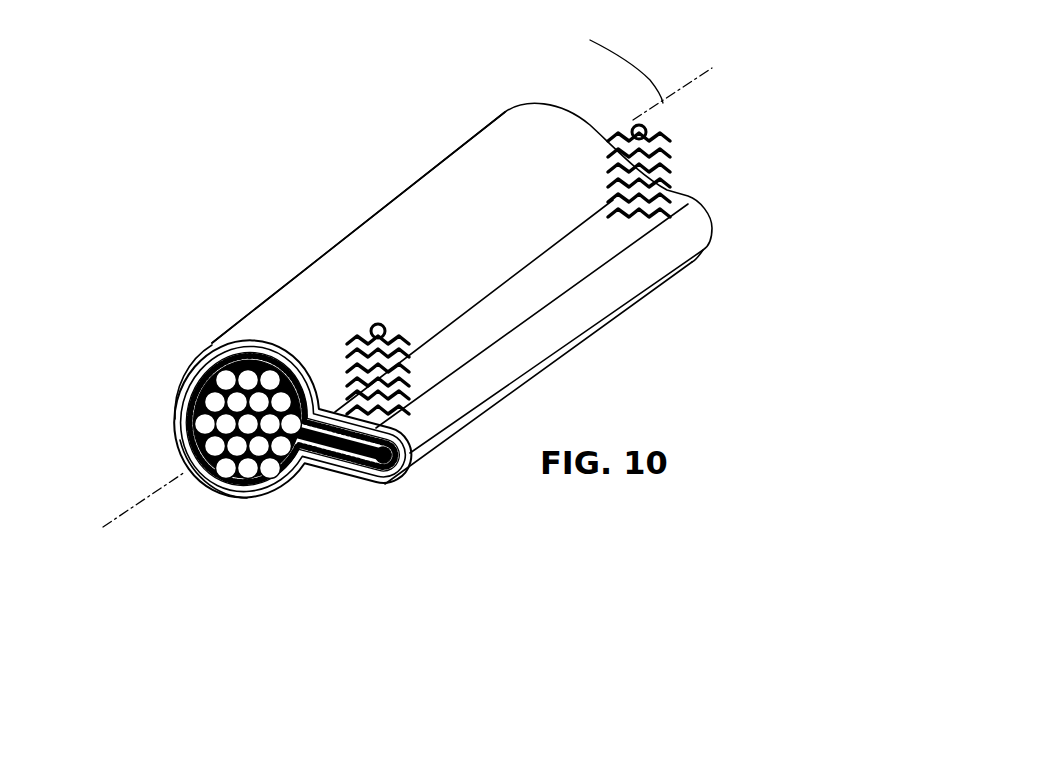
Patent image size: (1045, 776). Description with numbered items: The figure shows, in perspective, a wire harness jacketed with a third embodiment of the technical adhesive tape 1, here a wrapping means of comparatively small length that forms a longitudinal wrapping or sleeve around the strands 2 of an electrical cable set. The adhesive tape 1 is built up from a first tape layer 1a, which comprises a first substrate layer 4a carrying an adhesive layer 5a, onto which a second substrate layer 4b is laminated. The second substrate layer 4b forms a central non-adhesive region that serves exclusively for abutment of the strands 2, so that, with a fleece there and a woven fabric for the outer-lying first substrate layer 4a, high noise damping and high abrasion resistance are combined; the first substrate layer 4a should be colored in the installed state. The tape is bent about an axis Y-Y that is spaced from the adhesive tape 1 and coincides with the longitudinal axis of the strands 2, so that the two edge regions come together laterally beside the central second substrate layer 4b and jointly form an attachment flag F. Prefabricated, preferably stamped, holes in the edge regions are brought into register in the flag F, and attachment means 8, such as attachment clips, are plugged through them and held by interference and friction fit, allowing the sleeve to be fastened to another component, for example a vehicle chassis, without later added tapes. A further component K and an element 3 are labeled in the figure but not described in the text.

The adhesive tape 1 is at (462, 232).
The first tape layer 1a is at (265, 545).
The strands 2 is at (229, 431).
The insulating sheath 3 is at (294, 489).
The first substrate layer 4a is at (337, 407).
The second substrate layer 4b is at (138, 371).
The adhesive layer 5a is at (308, 548).
The attachment means 8 is at (442, 240).
The attachment flag F is at (430, 521).
The base plate K is at (583, 373).
The axis Y- Y is at (377, 285).